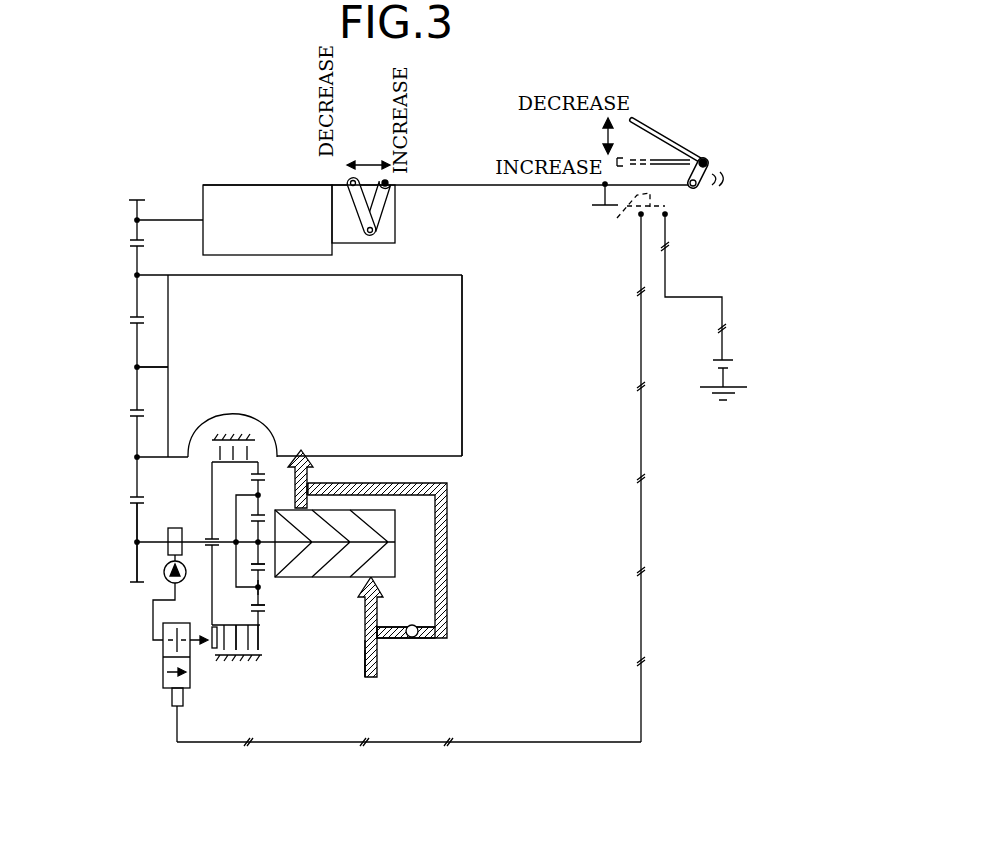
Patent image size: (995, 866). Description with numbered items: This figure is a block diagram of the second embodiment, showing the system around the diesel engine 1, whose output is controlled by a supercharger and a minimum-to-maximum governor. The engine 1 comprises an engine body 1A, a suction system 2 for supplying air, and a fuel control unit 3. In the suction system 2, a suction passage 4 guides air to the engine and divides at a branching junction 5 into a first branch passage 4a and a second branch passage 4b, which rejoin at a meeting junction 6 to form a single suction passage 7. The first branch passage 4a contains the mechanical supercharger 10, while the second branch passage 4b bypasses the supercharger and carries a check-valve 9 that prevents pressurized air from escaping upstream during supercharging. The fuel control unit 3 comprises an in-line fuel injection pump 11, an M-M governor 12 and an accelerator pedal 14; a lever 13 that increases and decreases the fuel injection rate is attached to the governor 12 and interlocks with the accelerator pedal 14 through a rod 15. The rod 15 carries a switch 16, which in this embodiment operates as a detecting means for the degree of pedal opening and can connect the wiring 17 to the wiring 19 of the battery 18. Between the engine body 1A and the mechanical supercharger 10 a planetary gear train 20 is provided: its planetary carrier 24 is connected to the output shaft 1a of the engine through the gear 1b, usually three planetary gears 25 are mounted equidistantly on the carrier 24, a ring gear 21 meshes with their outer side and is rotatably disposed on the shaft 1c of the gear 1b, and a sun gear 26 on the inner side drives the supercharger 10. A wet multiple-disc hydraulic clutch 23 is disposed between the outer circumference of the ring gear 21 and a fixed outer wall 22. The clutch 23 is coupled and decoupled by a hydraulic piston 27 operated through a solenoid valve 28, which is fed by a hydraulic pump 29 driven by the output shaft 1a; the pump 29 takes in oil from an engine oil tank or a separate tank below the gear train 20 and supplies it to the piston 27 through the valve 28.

The diesel engine 1 is at (473, 422).
The engine body 1A is at (443, 358).
The output shaft 1a is at (137, 367).
The gear 1b is at (137, 523).
The shaft 1c is at (200, 542).
The suction system 2 is at (362, 650).
The fuel control unit 3 is at (267, 173).
The suction passage 4 is at (380, 660).
The first branch passage 4a is at (377, 582).
The second branch passage 4b is at (448, 547).
The branching junction 5 is at (375, 620).
The meeting junction 6 is at (307, 478).
The suction passage 7 is at (301, 450).
The check-valve 9 is at (410, 640).
The mechanical supercharger 10 is at (385, 522).
The in-line fuel injection pump 11 is at (223, 200).
The M-M governor 12 is at (337, 195).
The lever 13 is at (365, 215).
The accelerator pedal 14 is at (658, 127).
The rod 15 is at (477, 184).
The switch 16 is at (603, 195).
The wiring 17 is at (641, 328).
The battery 18 is at (735, 367).
The wiring 19 is at (690, 297).
The planetary gear train 20 is at (215, 480).
The ring gear 21 is at (265, 618).
The fixed outer wall 22 is at (232, 660).
The hydraulic clutch 23 is at (257, 640).
The planetary carrier 24 is at (263, 583).
The planetary gears 25 is at (263, 598).
The sun gear 26 is at (263, 553).
The hydraulic piston 27 is at (216, 650).
The solenoid valve 28 is at (160, 660).
The hydraulic pump 29 is at (163, 572).